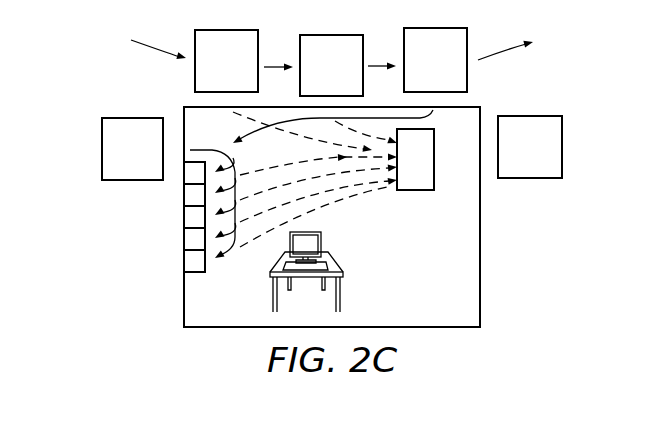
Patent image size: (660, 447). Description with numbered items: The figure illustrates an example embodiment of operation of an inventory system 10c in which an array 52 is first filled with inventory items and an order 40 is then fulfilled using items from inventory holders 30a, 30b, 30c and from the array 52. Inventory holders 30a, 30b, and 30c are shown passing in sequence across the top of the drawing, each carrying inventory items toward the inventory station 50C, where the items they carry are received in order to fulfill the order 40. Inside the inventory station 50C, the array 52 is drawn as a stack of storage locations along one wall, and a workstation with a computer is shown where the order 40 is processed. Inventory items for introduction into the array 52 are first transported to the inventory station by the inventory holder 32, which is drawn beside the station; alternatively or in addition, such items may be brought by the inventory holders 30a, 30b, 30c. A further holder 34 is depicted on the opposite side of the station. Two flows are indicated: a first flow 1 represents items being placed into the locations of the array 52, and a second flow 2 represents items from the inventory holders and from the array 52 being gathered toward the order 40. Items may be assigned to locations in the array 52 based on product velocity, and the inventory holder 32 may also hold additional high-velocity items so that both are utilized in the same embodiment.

The inventory system 10c is at (108, 247).
The inventory holder 30c is at (245, 74).
The inventory holder 30b is at (350, 78).
The inventory holder 30a is at (453, 72).
The inventory holder 32 is at (146, 161).
The module 34 is at (543, 159).
The inventory station 50C is at (423, 285).
The array 52 is at (193, 260).
The first signal path 1 is at (213, 189).
The second signal path 2 is at (333, 133).
The order 40 is at (420, 190).